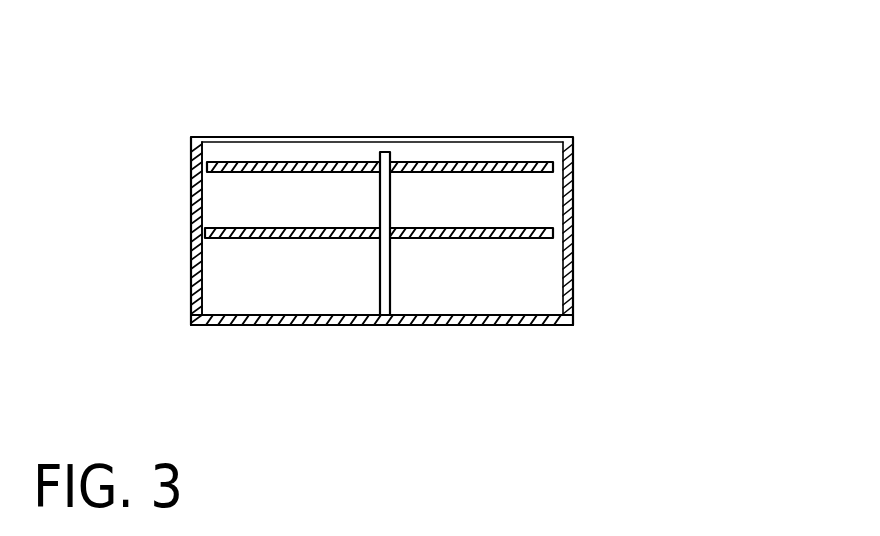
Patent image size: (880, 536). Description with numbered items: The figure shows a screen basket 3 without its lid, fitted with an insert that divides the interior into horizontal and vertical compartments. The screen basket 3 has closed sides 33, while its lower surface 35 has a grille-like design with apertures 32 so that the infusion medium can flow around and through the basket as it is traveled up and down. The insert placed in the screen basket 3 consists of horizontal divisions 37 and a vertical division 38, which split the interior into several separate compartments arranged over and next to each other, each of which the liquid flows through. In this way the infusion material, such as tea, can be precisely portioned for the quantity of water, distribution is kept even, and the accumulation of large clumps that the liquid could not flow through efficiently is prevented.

The screen basket 3 is at (207, 109).
The aperture 32 is at (347, 327).
The closed side 33 is at (192, 215).
The lower surface 35 is at (480, 330).
The horizontal division 37 is at (518, 165).
The vertical division 38 is at (392, 152).